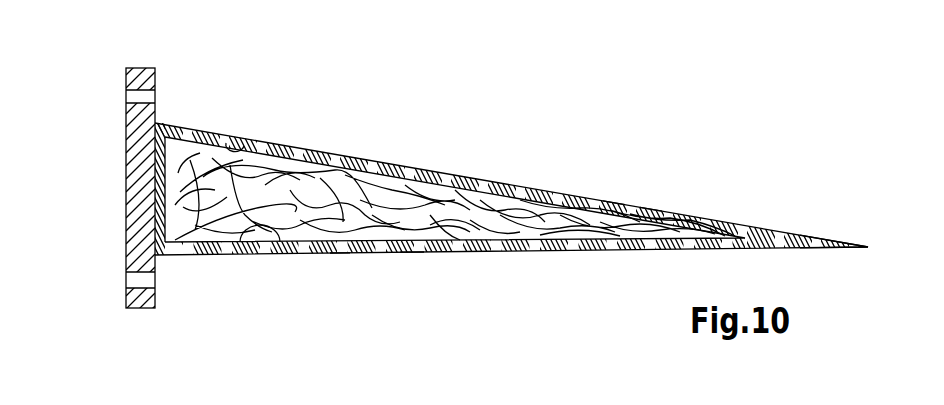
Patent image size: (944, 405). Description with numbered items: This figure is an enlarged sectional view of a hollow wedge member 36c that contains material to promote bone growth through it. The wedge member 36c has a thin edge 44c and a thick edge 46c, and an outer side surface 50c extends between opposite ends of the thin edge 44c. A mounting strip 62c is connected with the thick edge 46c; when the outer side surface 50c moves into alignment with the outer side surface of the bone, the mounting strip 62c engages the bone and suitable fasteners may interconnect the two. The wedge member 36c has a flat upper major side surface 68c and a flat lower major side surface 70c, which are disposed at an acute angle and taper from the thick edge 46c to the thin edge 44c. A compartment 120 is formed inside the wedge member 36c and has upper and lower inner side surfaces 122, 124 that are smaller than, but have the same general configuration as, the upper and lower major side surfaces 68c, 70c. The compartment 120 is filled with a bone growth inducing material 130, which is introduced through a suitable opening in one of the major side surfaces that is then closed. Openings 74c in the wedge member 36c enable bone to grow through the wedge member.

The wedge member 36c is at (437, 158).
The thin edge 44c is at (868, 247).
The thick edge 46c is at (158, 188).
The outer side surface 50c is at (147, 222).
The mounting strip 62c is at (143, 153).
The upper major side surface 68c is at (558, 190).
The lower major side surface 70c is at (599, 252).
The openings 74c is at (652, 213).
The compartment 120 is at (325, 160).
The upper inner side surface 122 is at (225, 140).
The lower inner side surface 124 is at (273, 248).
The bone growth inducing material 130 is at (427, 215).